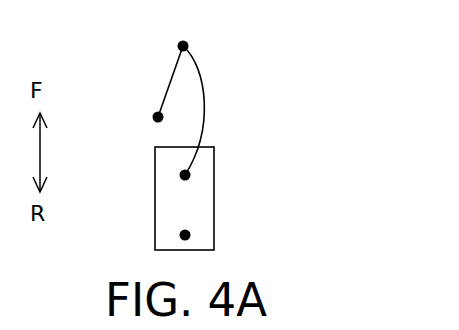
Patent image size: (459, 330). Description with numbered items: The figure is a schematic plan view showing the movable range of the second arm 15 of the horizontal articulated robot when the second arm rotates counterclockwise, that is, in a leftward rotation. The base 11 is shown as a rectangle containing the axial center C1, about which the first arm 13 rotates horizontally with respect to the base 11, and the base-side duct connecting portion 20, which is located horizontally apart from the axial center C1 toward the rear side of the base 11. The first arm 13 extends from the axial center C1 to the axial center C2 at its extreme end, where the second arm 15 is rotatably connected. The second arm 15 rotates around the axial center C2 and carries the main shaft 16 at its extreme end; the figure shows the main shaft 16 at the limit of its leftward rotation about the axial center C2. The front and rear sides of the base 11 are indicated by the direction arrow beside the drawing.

The base 11 is at (214, 190).
The first arm 13 is at (206, 110).
The second arm 15 is at (172, 78).
The main shaft 16 is at (157, 117).
The base-side duct connecting portion 20 is at (184, 235).
The axial center C1 is at (183, 175).
The axial center C2 is at (188, 44).